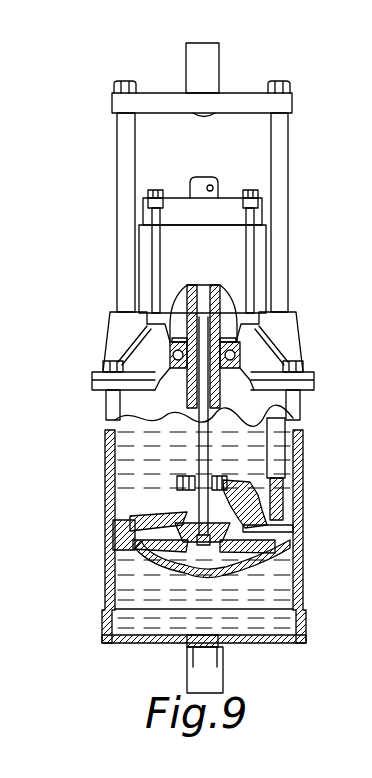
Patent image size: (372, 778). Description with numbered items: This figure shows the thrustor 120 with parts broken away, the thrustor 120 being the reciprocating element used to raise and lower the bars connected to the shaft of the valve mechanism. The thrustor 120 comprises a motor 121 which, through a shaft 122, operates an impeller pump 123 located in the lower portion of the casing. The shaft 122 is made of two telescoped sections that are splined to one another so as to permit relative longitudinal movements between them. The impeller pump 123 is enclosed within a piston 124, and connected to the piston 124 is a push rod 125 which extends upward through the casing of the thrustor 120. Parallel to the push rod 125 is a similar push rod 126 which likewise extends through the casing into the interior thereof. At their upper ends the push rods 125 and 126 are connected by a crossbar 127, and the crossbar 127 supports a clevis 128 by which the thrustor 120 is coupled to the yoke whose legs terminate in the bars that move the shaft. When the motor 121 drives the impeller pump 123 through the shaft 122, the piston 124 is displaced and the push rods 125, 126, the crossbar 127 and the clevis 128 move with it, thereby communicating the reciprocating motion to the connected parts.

The thrustor 120 is at (248, 169).
The motor 121 is at (202, 245).
The shaft 122 is at (190, 446).
The impeller pump 123 is at (183, 510).
The piston 124 is at (255, 505).
The push rod 125 is at (281, 136).
The push rod 126 is at (118, 163).
The crossbar 127 is at (247, 103).
The clevis 128 is at (208, 68).